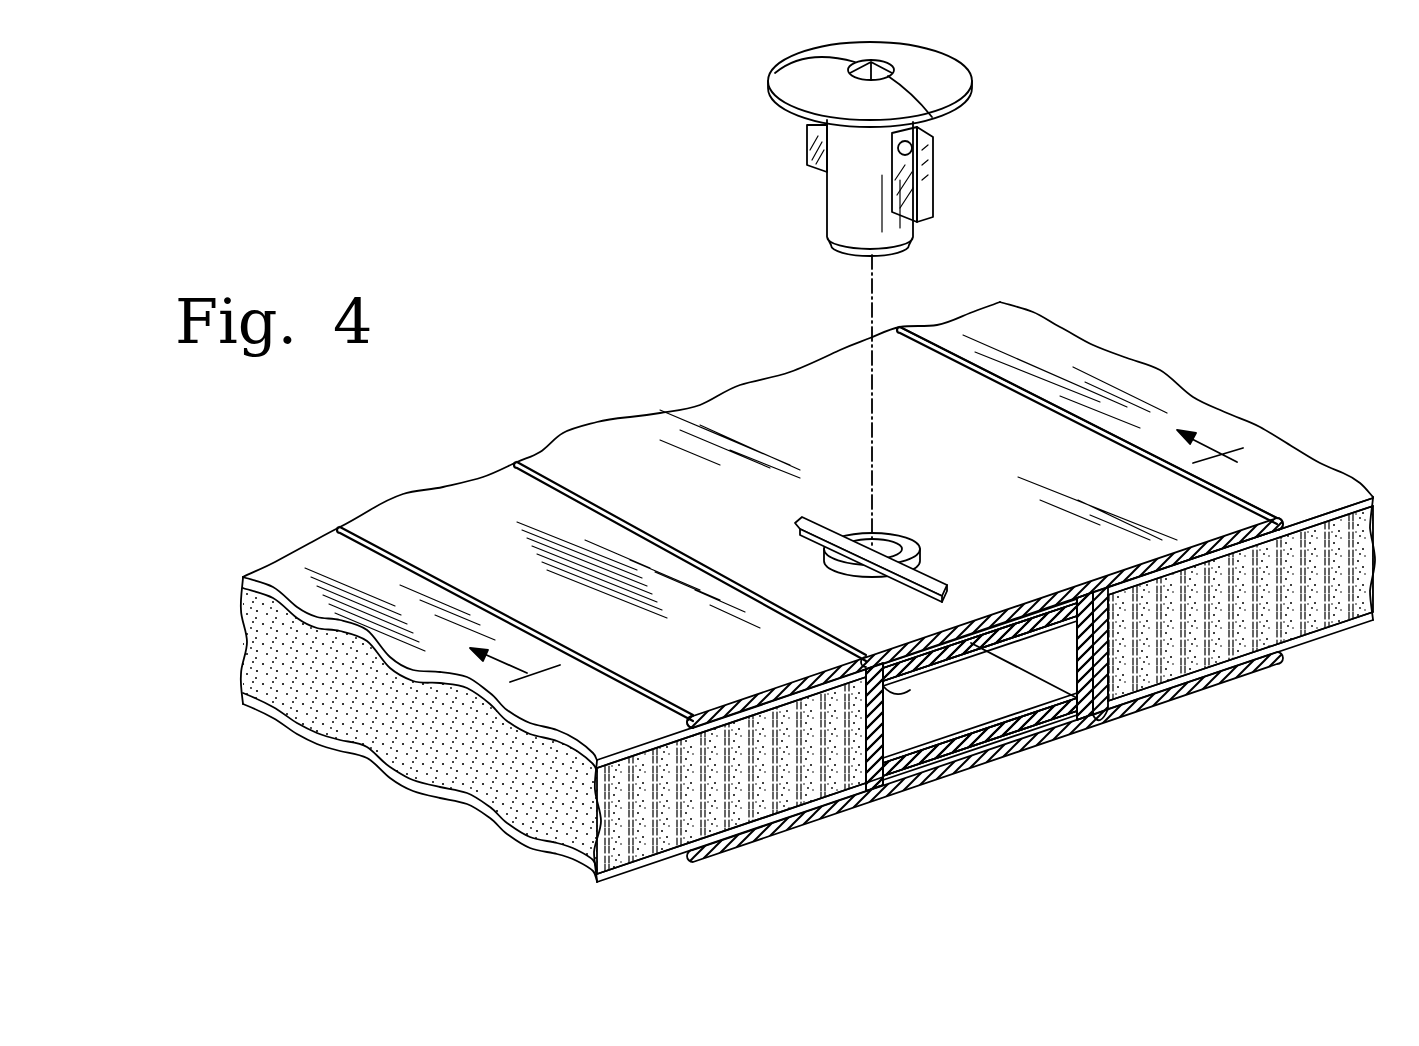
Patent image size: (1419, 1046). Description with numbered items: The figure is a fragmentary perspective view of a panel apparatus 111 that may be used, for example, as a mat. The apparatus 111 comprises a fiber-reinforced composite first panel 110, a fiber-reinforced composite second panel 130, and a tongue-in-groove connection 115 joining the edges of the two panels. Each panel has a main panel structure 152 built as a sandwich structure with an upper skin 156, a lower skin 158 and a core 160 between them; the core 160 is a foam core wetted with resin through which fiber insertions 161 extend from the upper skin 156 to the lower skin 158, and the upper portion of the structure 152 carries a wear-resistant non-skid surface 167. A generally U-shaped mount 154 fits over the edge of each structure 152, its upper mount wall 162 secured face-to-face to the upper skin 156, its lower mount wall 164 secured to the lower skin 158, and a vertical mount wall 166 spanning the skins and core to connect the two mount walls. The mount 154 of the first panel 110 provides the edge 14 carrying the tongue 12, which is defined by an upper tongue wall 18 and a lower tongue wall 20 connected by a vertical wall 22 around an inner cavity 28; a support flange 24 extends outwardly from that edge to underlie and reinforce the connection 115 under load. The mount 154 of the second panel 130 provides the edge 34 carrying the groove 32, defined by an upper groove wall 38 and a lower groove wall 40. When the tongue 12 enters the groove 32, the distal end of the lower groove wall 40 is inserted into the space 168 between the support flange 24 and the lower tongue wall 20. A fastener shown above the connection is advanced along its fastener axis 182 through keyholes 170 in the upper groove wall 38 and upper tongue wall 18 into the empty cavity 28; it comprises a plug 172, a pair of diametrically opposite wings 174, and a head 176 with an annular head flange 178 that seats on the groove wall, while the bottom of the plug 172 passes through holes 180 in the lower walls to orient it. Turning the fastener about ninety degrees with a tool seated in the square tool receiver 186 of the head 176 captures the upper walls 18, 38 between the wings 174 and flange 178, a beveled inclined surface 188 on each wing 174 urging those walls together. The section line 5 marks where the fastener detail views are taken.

The section line 5- 5 is at (856, 571).
The tongue 12 is at (1068, 735).
The edge 14 is at (881, 712).
The upper tongue wall 18 is at (984, 612).
The lower tongue wall 20 is at (1036, 704).
The vertical wall 22 is at (1078, 662).
The support flange 24 is at (935, 795).
The inner cavity 28 is at (963, 653).
The groove 32 is at (873, 790).
The edge 34 is at (1101, 578).
The upper groove wall 38 is at (1030, 590).
The lower groove wall 40 is at (1000, 750).
The first panel 110 is at (297, 568).
The panel apparatus 111 is at (518, 262).
The tongue-in-groove connection 115 is at (1070, 738).
The second panel 130 is at (1125, 378).
The main panel structure 152 is at (455, 600).
The mount 154 is at (700, 675).
The upper skin 156 is at (585, 728).
The lower skin 158 is at (594, 880).
The core 160 is at (408, 788).
The fiber insertions 161 is at (672, 852).
The upper mount wall 162 is at (725, 673).
The lower mount wall 164 is at (800, 832).
The vertical mount wall 166 is at (873, 662).
The non-skid surface 167 is at (375, 558).
The space 168 is at (893, 782).
The keyholes 170 is at (915, 548).
The plug 172 is at (850, 246).
The wings 174 is at (818, 168).
The head 176 is at (945, 69).
The head flange 178 is at (975, 103).
The holes 180 is at (918, 682).
The fastener axis 182 is at (874, 432).
The tool receiver 186 is at (790, 78).
The inclined surface 188 is at (938, 140).